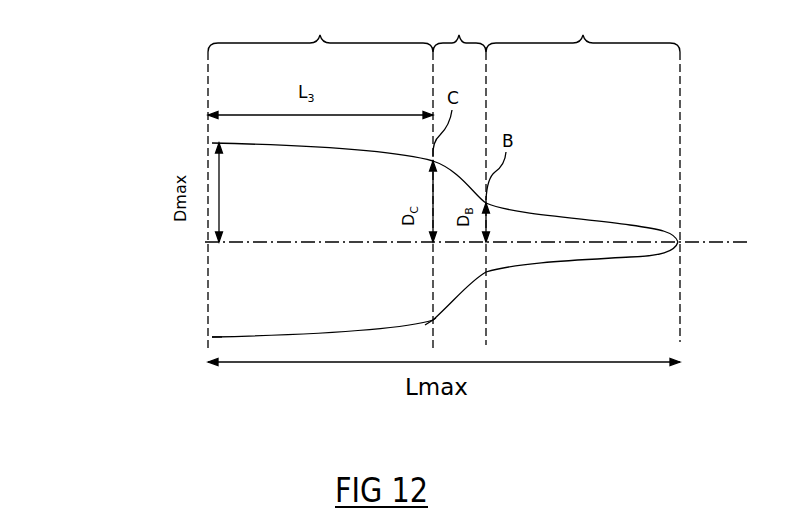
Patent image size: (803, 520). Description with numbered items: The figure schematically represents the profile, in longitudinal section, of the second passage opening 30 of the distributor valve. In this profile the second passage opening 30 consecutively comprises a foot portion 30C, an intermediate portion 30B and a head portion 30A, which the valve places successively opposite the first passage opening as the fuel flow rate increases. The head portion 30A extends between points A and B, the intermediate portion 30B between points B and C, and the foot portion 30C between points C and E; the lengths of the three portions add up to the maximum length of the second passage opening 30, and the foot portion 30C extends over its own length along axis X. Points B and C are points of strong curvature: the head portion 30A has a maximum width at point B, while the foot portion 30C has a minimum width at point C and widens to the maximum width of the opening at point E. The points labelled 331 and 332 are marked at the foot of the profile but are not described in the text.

The second passage opening 30 is at (106, 178).
The head portion 30A is at (583, 174).
The intermediate portion 30B is at (459, 175).
The foot portion 30C is at (320, 178).
The transition point 331 is at (430, 338).
The proximal end point 332 is at (212, 356).